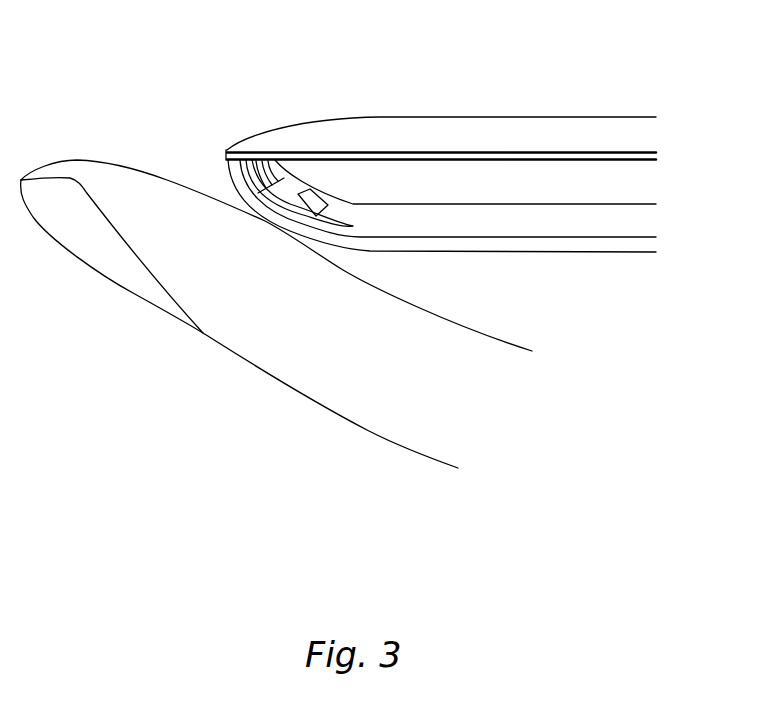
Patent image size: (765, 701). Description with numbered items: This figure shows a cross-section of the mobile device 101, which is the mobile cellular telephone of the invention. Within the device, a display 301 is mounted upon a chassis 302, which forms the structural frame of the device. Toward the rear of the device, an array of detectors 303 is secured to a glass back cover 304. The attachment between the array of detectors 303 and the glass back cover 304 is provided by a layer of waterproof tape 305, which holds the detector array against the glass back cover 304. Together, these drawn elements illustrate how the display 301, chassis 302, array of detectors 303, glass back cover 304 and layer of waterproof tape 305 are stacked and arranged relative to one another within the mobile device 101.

The mobile device 101 is at (236, 101).
The display 301 is at (630, 133).
The chassis 302 is at (630, 185).
The array of detectors 303 is at (307, 200).
The glass back cover 304 is at (630, 244).
The layer of waterproof tape 305 is at (238, 183).